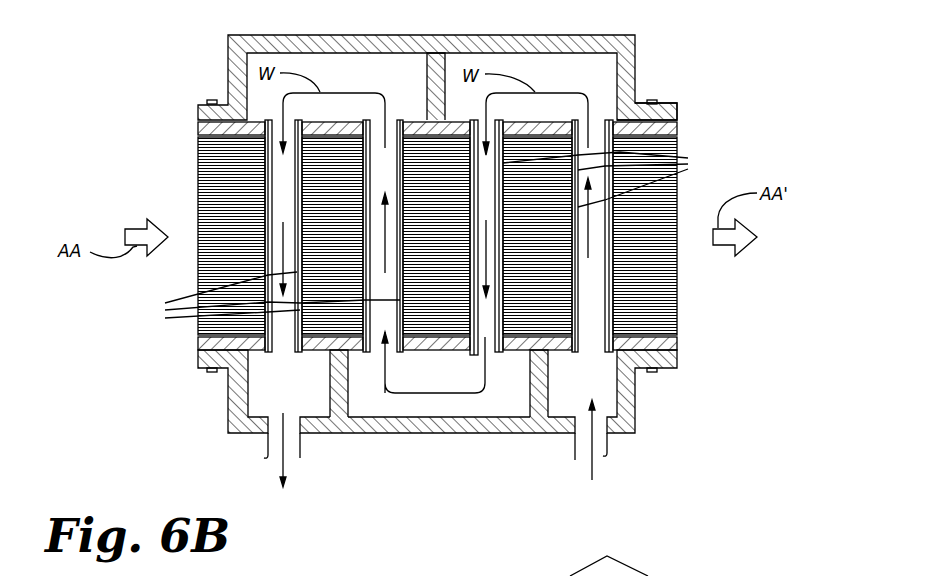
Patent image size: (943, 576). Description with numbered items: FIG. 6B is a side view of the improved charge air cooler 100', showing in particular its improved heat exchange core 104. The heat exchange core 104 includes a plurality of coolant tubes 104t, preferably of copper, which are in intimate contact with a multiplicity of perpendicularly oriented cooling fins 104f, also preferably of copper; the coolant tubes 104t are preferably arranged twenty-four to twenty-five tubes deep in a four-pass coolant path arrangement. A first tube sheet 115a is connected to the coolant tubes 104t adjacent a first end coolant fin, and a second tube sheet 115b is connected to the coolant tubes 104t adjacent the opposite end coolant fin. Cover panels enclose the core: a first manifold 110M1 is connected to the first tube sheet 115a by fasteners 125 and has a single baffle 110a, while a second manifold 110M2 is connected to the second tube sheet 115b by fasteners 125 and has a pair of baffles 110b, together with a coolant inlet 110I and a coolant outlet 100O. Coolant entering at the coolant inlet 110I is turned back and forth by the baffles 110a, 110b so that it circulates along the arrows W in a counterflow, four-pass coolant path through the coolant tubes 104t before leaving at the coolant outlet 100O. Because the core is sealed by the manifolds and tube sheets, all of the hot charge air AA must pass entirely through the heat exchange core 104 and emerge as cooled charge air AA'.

The first manifold 110M1 is at (546, 35).
The single baffle 110a is at (426, 76).
The first tube sheet 115a is at (680, 125).
The second tube sheet 115b is at (678, 345).
The second manifold 110M2 is at (440, 435).
The pair of baffles 110b is at (348, 392).
The fasteners 125 is at (210, 100).
The coolant outlet 100O is at (268, 455).
The coolant inlet 110I is at (600, 455).
The cooling fins 104f is at (208, 200).
The coolant tubes 104t is at (427, 239).
The heat exchange core 104 is at (334, 454).
The heat exchanger assembly 100' is at (667, 546).